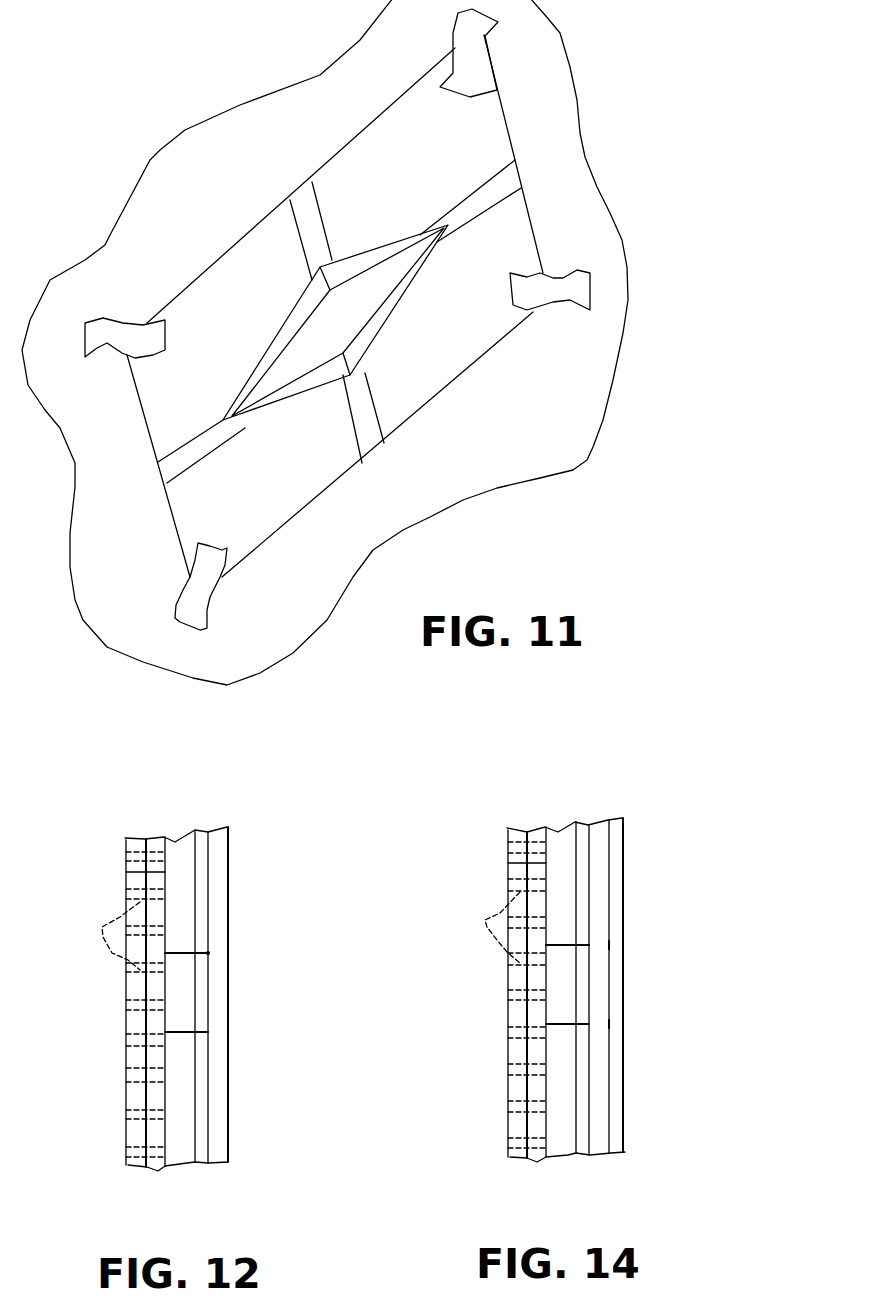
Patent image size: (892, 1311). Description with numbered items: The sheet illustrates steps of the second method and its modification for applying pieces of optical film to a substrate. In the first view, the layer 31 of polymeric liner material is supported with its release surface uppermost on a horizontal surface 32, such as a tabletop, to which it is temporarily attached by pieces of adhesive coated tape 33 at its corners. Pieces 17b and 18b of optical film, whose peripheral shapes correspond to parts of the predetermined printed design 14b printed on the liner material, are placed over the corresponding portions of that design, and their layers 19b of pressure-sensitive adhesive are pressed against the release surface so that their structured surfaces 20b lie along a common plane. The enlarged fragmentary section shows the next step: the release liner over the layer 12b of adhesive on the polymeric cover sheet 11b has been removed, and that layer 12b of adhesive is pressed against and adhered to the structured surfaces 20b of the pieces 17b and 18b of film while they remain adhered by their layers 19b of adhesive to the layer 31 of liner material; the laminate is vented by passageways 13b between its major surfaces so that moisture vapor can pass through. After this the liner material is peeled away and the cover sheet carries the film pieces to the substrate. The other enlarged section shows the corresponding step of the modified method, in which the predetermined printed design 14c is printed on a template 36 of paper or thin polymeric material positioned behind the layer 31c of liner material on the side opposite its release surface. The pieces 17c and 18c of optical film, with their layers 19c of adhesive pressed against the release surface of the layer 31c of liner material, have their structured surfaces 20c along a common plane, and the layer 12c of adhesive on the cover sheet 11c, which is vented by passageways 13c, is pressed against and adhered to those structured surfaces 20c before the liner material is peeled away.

In FIG. 11, the horizontal surface 32 is at (200, 153).
In FIG. 11, the layer of polymeric liner material 31 is at (413, 393).
In FIG. 12, the layer of polymeric liner material 31 is at (217, 858).
In FIG. 11, the pieces of adhesive coated tape 33 is at (477, 40).
In FIG. 11, the piece of optical film 18b is at (274, 343).
In FIG. 12, the piece of optical film 18b is at (172, 842).
In FIG. 11, the piece of optical film 17b is at (320, 208).
In FIG. 12, the piece of optical film 17b is at (180, 995).
In FIG. 11, the structured surface 20b is at (470, 197).
In FIG. 12, the structured surface 20b is at (125, 870).
In FIG. 12, the layer of pressure-sensitive adhesive 19b is at (200, 835).
In FIG. 12, the predetermined printed design 14b is at (208, 953).
In FIG. 12, the passageways 13b is at (93, 936).
In FIG. 12, the layer of pressure-sensitive adhesive 12b is at (155, 1020).
In FIG. 12, the polymeric cover sheet 11b is at (133, 1133).
In FIG. 14, the piece of optical film 18c is at (558, 833).
In FIG. 14, the piece of optical film 17c is at (563, 987).
In FIG. 14, the structured surface 20c is at (523, 865).
In FIG. 14, the layer of pressure-sensitive adhesive 19c is at (583, 828).
In FIG. 14, the predetermined printed design 14c is at (610, 945).
In FIG. 14, the passageways 13c is at (475, 927).
In FIG. 14, the layer of pressure-sensitive adhesive 12c is at (538, 1012).
In FIG. 14, the polymeric cover sheet 11c is at (517, 1127).
In FIG. 14, the layer of liner material 31c is at (602, 850).
In FIG. 14, the template 36 is at (617, 887).